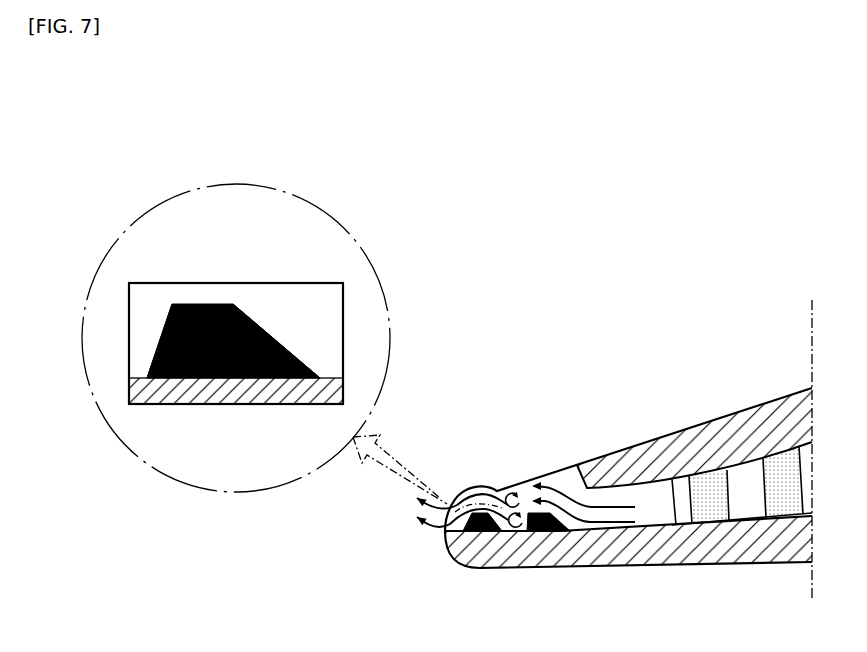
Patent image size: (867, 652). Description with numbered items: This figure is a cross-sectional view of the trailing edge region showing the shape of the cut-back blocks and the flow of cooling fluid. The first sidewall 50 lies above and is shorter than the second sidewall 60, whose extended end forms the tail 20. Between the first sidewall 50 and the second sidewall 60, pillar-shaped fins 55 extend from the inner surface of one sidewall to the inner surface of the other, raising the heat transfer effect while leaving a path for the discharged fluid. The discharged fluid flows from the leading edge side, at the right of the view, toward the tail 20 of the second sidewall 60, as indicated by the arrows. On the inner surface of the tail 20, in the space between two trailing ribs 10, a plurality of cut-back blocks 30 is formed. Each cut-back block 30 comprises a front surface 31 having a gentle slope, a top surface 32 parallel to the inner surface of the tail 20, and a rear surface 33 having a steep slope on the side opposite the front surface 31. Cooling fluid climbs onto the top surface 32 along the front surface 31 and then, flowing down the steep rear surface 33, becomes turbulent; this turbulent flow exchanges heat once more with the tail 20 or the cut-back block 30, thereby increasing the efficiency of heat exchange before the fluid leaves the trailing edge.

The trailing rib 10 is at (575, 466).
The tail 20 is at (452, 560).
The cut-back block 30 is at (541, 533).
The front surface 31 is at (277, 340).
The top surface 32 is at (203, 304).
The rear surface 33 is at (160, 340).
The first sidewall 50 is at (697, 440).
The fin 55 is at (775, 463).
The second sidewall 60 is at (643, 557).